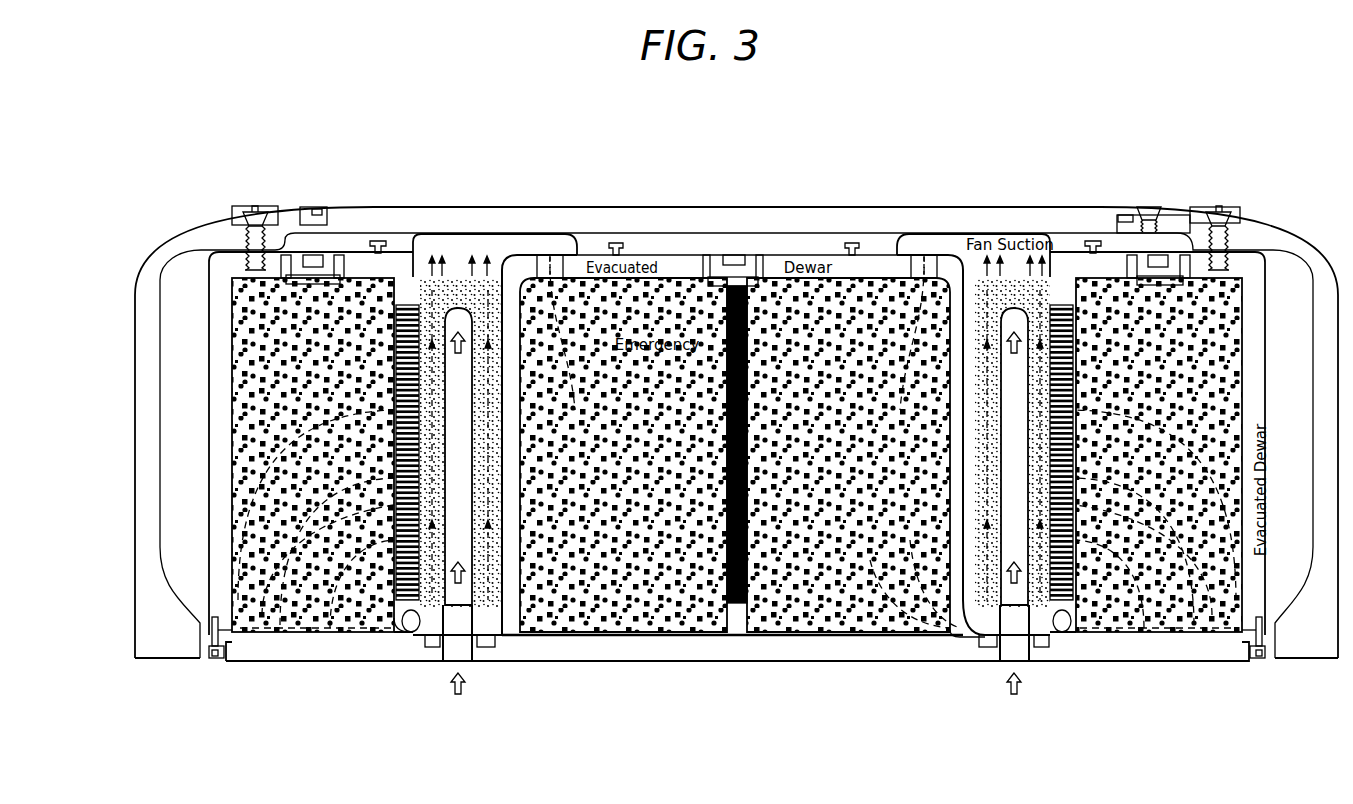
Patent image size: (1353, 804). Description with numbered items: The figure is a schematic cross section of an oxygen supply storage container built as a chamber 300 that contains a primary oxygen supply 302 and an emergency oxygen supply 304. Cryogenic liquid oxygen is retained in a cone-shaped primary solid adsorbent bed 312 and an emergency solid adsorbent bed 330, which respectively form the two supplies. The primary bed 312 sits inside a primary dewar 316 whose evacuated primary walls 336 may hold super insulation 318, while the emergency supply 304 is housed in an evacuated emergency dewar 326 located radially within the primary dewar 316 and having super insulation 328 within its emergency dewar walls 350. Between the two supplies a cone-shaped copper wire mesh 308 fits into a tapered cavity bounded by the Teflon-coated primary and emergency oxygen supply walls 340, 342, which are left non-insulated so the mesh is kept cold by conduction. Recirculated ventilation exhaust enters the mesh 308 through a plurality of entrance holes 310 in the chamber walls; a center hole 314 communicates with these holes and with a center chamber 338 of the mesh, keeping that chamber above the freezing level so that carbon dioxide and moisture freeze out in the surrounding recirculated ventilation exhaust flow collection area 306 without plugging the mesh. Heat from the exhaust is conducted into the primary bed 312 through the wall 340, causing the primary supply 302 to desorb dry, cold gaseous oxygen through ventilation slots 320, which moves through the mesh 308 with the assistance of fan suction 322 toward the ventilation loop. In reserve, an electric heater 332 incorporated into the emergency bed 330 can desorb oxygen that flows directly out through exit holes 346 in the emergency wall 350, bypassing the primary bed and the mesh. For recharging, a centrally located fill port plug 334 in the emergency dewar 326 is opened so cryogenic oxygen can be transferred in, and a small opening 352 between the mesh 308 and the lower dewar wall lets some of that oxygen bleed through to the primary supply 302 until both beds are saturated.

The chamber 300 is at (135, 314).
The primary oxygen supply 302 is at (232, 367).
The emergency oxygen supply 304 is at (880, 638).
The recirculated ventilation exhaust flow collection area 306 is at (980, 637).
The copper wire mesh 308 is at (1038, 603).
The entrance holes 310 is at (463, 650).
The primary solid adsorbent bed 312 is at (243, 628).
The center hole 314 is at (507, 597).
The primary dewar 316 is at (210, 393).
The super insulation 318 is at (315, 655).
The ventilation slots 320 is at (413, 252).
The fan suction 322 is at (502, 253).
The evacuated emergency dewar 326 is at (947, 257).
The super insulation 328 is at (853, 650).
The emergency solid adsorbent bed 330 is at (778, 257).
The electric heater 332 is at (582, 635).
The fill port plug 334 is at (718, 257).
The evacuated primary walls 336 is at (200, 277).
The center chamber 338 is at (1017, 603).
The primary oxygen supply wall 340 is at (415, 612).
The emergency oxygen supply wall 342 is at (485, 600).
The exit holes 346 is at (918, 257).
The emergency dewar walls 350 is at (735, 661).
The small opening 352 is at (405, 625).